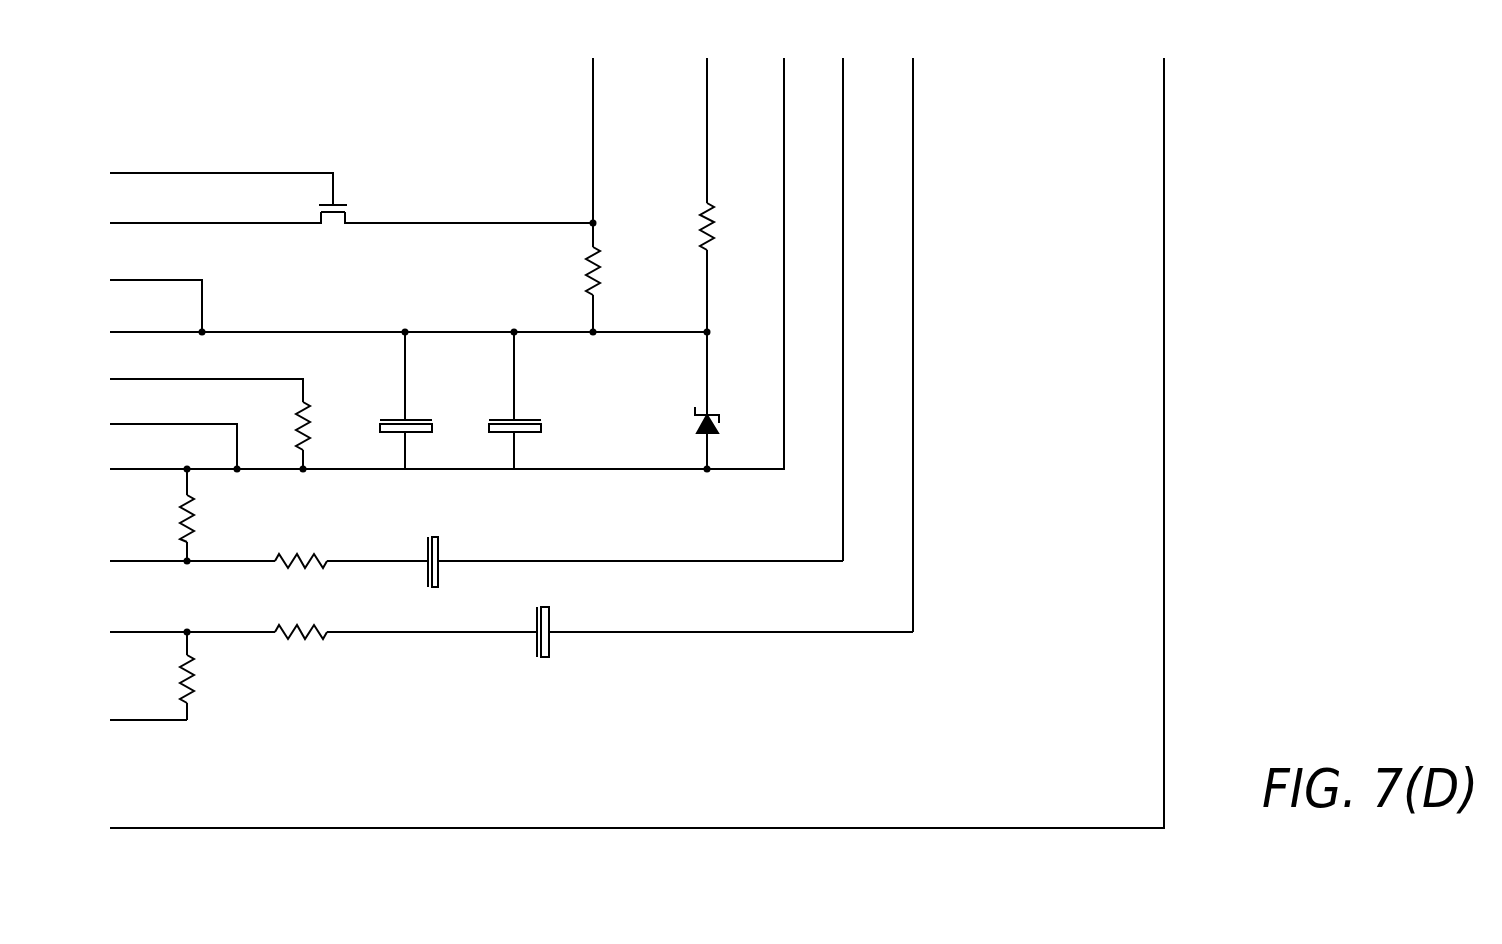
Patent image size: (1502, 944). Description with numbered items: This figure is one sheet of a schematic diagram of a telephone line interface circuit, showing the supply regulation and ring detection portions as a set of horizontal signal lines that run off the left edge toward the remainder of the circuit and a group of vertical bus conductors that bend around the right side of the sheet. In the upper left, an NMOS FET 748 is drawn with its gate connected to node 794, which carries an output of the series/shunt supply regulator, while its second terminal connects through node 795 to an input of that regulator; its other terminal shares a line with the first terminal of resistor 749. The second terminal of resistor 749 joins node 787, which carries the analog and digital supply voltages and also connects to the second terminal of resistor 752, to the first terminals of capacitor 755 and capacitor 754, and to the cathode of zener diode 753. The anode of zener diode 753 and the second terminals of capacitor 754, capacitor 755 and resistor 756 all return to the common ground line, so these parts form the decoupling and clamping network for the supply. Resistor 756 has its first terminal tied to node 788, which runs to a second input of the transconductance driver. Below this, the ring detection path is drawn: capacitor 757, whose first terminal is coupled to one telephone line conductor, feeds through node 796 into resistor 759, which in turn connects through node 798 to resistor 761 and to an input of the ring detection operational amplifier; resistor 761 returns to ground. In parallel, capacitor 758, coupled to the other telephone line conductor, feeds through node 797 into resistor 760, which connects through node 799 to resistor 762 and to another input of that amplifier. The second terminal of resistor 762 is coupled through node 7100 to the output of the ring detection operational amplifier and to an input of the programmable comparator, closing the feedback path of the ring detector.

The NMOS FET 748 is at (347, 212).
The resistor 749 is at (593, 278).
The resistor 752 is at (707, 213).
The zener diode 753 is at (698, 432).
The capacitor 754 is at (528, 418).
The capacitor 755 is at (418, 418).
The resistor 756 is at (303, 420).
The capacitor 757 is at (439, 547).
The capacitor 758 is at (552, 650).
The resistor 759 is at (313, 560).
The resistor 760 is at (307, 638).
The resistor 761 is at (186, 535).
The resistor 762 is at (193, 692).
The node 787 is at (707, 297).
The node 788 is at (253, 378).
The node 794 is at (297, 172).
The node 795 is at (258, 224).
The node 796 is at (390, 562).
The node 797 is at (435, 633).
The node 798 is at (145, 565).
The node 799 is at (215, 633).
The node 7100 is at (157, 722).